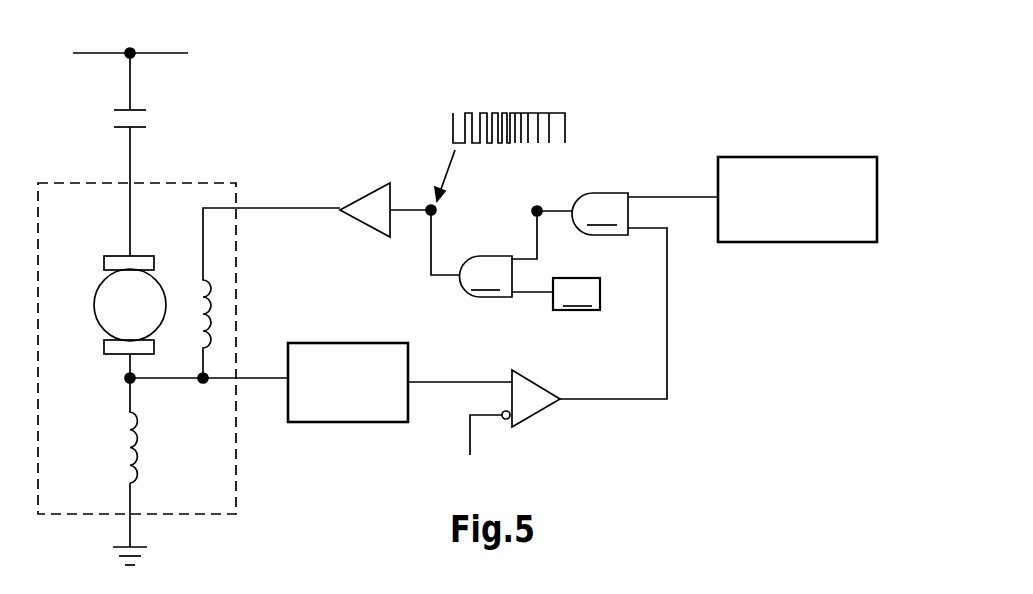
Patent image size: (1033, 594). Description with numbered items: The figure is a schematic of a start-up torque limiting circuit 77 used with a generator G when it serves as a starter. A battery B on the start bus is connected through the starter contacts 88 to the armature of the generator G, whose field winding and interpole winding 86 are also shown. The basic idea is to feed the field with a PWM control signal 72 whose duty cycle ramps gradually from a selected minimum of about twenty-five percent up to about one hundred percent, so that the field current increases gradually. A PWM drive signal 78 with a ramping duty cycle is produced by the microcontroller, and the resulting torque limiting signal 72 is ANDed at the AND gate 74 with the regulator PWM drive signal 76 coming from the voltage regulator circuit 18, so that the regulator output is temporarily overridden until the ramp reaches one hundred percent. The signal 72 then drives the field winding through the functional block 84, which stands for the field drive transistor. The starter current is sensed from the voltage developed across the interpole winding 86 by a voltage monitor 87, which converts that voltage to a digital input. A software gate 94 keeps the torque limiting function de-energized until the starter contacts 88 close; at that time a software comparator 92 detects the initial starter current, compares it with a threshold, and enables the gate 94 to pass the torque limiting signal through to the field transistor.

The battery B is at (130, 48).
The starter contacts 88 is at (125, 109).
The generator G is at (236, 477).
The interpole winding 86 is at (137, 420).
The voltage monitor 87 is at (360, 423).
The comparator 92 is at (544, 408).
The functional block 84 is at (381, 186).
The PWM control signal 72 is at (520, 92).
The AND gate 74 is at (501, 251).
The regulator PWM drive signal 76 is at (527, 294).
The voltage regulator circuit 18 is at (576, 294).
The software gate 94 is at (645, 214).
The PWM drive signal 78 is at (752, 157).
The start-up torque limiting circuit 77 is at (645, 492).